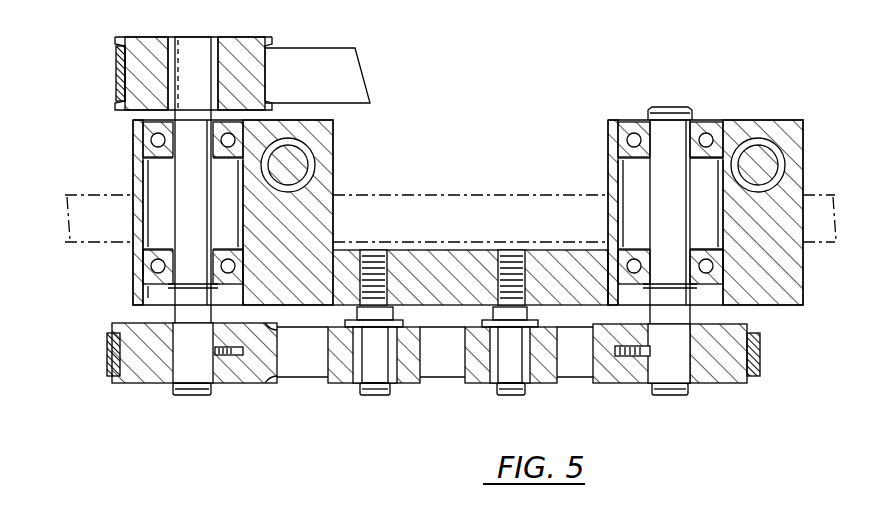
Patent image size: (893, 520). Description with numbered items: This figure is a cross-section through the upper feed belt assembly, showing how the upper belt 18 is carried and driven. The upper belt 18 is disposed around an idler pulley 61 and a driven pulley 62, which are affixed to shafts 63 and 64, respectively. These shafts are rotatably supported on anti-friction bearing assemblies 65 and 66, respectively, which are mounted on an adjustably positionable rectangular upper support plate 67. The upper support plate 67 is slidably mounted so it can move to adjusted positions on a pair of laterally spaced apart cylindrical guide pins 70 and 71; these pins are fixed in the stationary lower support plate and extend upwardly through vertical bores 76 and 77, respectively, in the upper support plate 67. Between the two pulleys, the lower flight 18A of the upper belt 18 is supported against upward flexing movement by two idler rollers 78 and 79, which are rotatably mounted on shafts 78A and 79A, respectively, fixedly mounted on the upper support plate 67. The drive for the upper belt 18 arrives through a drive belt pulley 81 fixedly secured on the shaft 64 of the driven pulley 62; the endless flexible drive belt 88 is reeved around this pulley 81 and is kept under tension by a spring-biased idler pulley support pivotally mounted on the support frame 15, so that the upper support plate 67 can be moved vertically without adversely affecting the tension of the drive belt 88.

The support frame 15 is at (112, 194).
The upper belt 18 is at (107, 355).
The lower flight 18A is at (302, 366).
The idler pulley 61 is at (722, 385).
The driven pulley 62 is at (147, 385).
The shaft 63 is at (668, 397).
The shaft 64 is at (186, 398).
The anti-friction bearing assembly 65 is at (609, 144).
The anti-friction bearing assembly 66 is at (136, 144).
The upper support plate 67 is at (430, 258).
The cylindrical guide pin 70 is at (756, 150).
The cylindrical guide pin 71 is at (306, 150).
The vertical bore 76 is at (778, 162).
The vertical bore 77 is at (309, 166).
The idler roller 78 is at (476, 385).
The shaft 78A is at (514, 396).
The idler roller 79 is at (344, 385).
The shaft 79A is at (375, 396).
The drive belt pulley 81 is at (247, 37).
The drive belt 88 is at (117, 65).